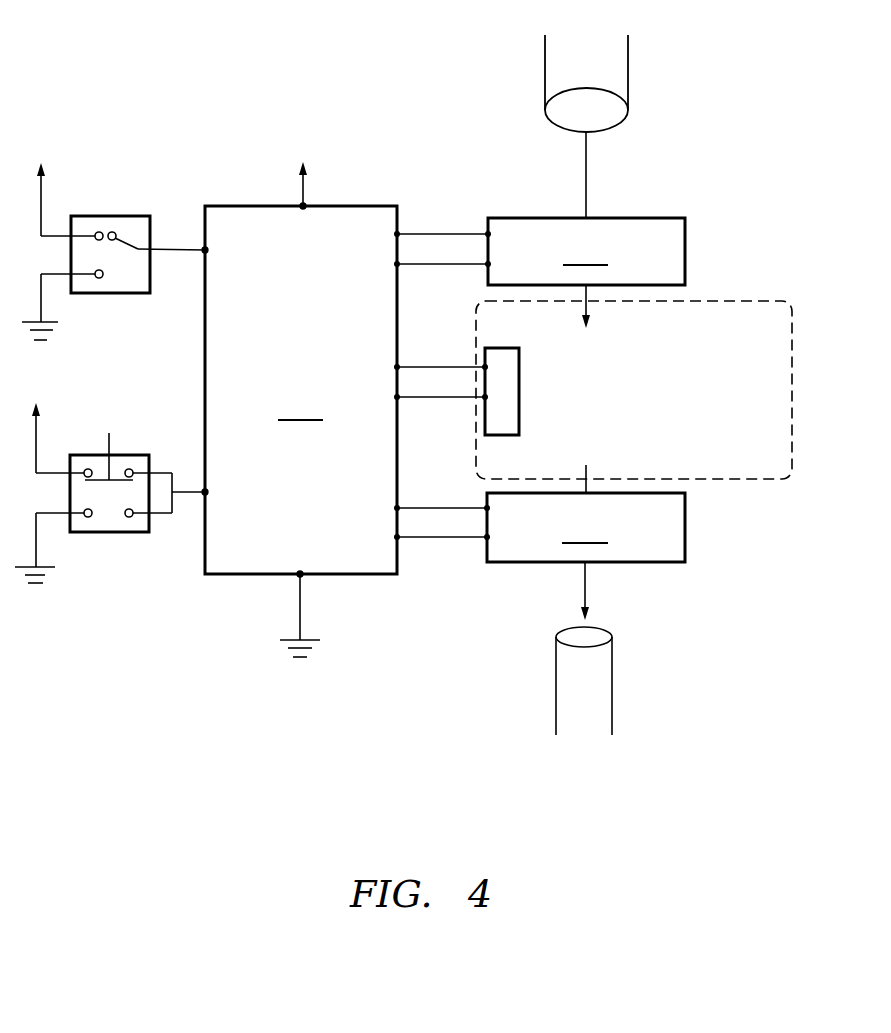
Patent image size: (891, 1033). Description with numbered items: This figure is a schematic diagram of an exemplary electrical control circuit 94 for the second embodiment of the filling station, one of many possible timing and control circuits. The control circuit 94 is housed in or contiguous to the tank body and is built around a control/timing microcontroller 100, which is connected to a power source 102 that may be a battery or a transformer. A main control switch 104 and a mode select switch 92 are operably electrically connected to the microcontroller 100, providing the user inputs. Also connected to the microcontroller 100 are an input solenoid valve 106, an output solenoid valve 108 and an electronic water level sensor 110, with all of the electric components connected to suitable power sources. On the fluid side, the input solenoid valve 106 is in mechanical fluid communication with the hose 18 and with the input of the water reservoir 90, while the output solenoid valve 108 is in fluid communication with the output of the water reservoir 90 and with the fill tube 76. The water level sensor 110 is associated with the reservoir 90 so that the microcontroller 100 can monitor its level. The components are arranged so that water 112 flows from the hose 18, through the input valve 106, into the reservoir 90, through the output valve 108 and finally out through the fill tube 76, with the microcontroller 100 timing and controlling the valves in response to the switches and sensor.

The hose 18 is at (613, 63).
The fill tube 76 is at (595, 700).
The water reservoir 90 is at (763, 393).
The mode select switch 92 is at (88, 216).
The electrical control circuit 94 is at (189, 752).
The control/timing microcontroller 100 is at (346, 431).
The power source 102 is at (303, 190).
The main control switch 104 is at (93, 532).
The input solenoid valve 106 is at (586, 273).
The output solenoid valve 108 is at (586, 542).
The electronic water level sensor 110 is at (502, 382).
The water 112 is at (586, 167).